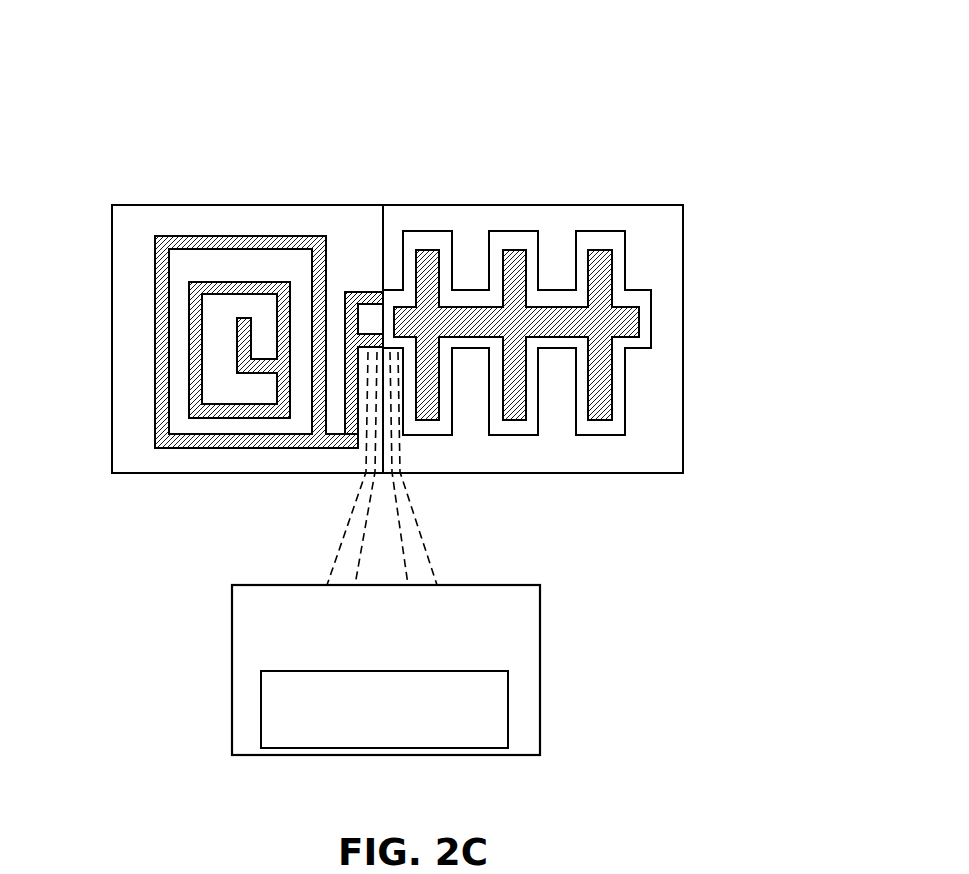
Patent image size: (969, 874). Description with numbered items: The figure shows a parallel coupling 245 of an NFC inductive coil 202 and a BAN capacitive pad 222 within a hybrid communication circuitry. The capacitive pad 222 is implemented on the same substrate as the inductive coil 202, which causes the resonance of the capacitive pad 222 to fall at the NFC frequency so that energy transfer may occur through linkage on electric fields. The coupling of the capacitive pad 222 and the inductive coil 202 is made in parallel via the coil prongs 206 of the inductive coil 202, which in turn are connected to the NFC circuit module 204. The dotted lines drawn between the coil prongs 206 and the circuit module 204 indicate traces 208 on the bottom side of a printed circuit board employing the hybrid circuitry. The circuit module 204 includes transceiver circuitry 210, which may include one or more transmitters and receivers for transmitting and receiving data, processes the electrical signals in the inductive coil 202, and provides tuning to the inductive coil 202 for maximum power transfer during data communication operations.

The parallel coupling 245 is at (662, 66).
The inductive coil 202 is at (112, 247).
The coil prongs 206 is at (357, 289).
The capacitive pad 222 is at (602, 205).
The traces 208 is at (413, 520).
The circuit module 204 is at (402, 662).
The transceiver circuitry 210 is at (400, 744).